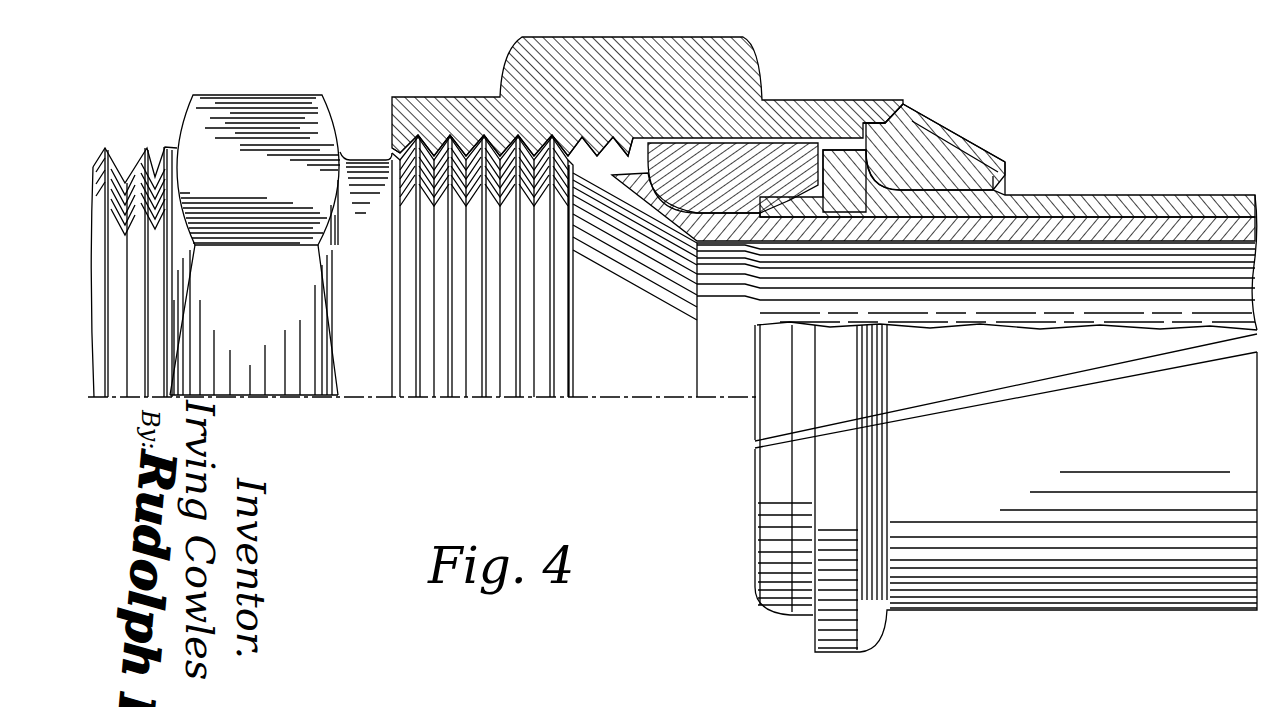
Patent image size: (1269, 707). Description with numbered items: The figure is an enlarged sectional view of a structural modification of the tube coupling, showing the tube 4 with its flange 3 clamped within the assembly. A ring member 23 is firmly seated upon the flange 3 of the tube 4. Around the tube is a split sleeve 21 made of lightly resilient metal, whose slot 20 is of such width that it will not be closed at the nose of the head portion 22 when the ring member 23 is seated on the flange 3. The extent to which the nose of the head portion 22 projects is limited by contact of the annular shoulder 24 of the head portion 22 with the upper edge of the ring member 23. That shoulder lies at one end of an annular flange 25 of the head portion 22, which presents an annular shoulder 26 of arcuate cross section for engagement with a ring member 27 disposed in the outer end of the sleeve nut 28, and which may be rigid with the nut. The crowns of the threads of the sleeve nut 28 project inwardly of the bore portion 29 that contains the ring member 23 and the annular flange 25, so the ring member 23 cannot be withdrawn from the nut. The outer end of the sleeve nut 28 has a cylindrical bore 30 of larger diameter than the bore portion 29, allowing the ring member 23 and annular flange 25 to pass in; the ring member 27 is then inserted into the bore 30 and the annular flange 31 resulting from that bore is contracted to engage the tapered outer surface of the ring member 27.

The flange 3 is at (657, 210).
The tube 4 is at (1180, 228).
The slot 20 is at (1096, 378).
The split sleeve 21 is at (1100, 563).
The head portion 22 is at (770, 473).
The ring member 23 is at (758, 150).
The annular shoulder 24 is at (848, 168).
The annular flange 25 is at (834, 150).
The annular shoulder 26 is at (918, 112).
The ring member 27 is at (930, 147).
The sleeve nut 28 is at (657, 24).
The bore portion 29 is at (643, 133).
The cylindrical bore 30 is at (872, 108).
The annular flange 31 is at (976, 156).